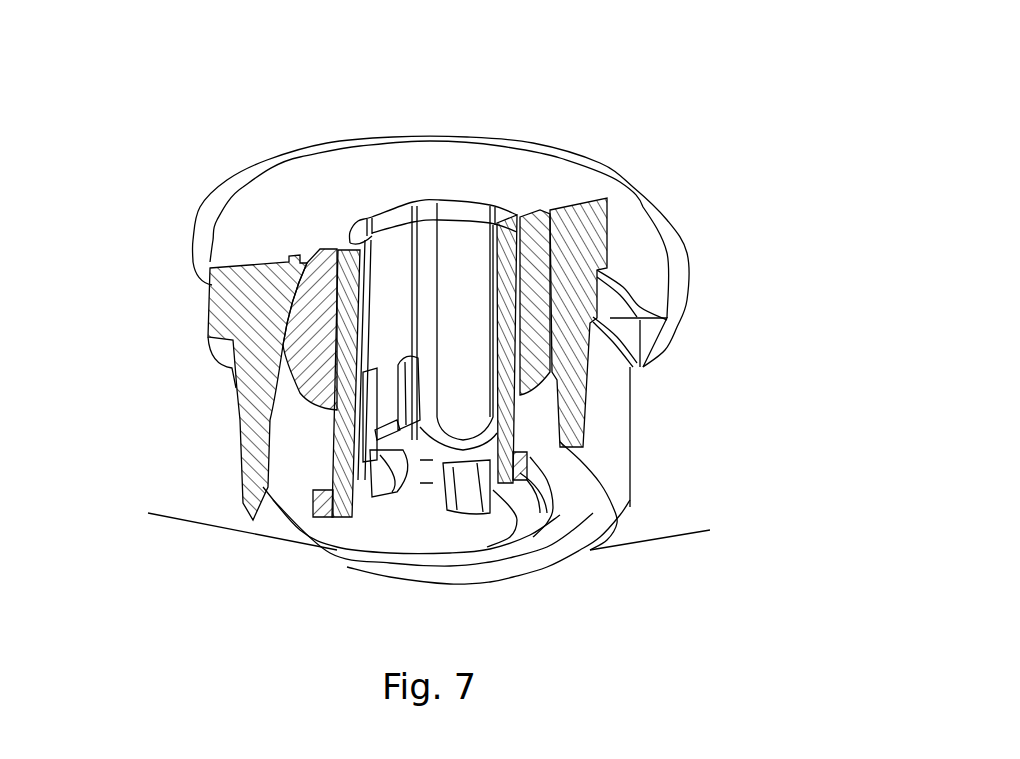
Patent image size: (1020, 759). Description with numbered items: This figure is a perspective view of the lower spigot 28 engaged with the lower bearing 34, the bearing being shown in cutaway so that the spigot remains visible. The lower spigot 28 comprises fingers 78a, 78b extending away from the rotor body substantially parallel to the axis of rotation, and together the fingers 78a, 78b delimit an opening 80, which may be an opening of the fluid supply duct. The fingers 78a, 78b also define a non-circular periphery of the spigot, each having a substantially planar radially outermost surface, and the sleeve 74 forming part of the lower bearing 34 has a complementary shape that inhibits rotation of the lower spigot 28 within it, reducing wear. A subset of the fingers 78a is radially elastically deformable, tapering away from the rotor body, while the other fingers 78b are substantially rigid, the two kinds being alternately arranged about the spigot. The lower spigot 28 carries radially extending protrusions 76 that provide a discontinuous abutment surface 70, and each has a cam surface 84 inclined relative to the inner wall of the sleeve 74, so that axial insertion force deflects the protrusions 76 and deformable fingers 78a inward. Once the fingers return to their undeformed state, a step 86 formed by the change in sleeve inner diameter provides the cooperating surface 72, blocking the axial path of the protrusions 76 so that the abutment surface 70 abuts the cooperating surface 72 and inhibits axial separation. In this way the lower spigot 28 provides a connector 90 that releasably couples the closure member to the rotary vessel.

The lower spigot 28 is at (395, 235).
The lower bearing 34 is at (593, 370).
The abutment surface 70 is at (387, 420).
The cooperating surface 72 is at (350, 447).
The sleeve 74 is at (513, 257).
The protrusions 76 is at (390, 437).
The radially elastically deformable fingers 78a is at (377, 312).
The substantially non-deformable fingers 78b is at (463, 280).
The opening 80 is at (463, 537).
The cam surface 84 is at (403, 427).
The step 86 is at (547, 452).
The connector 90 is at (300, 450).